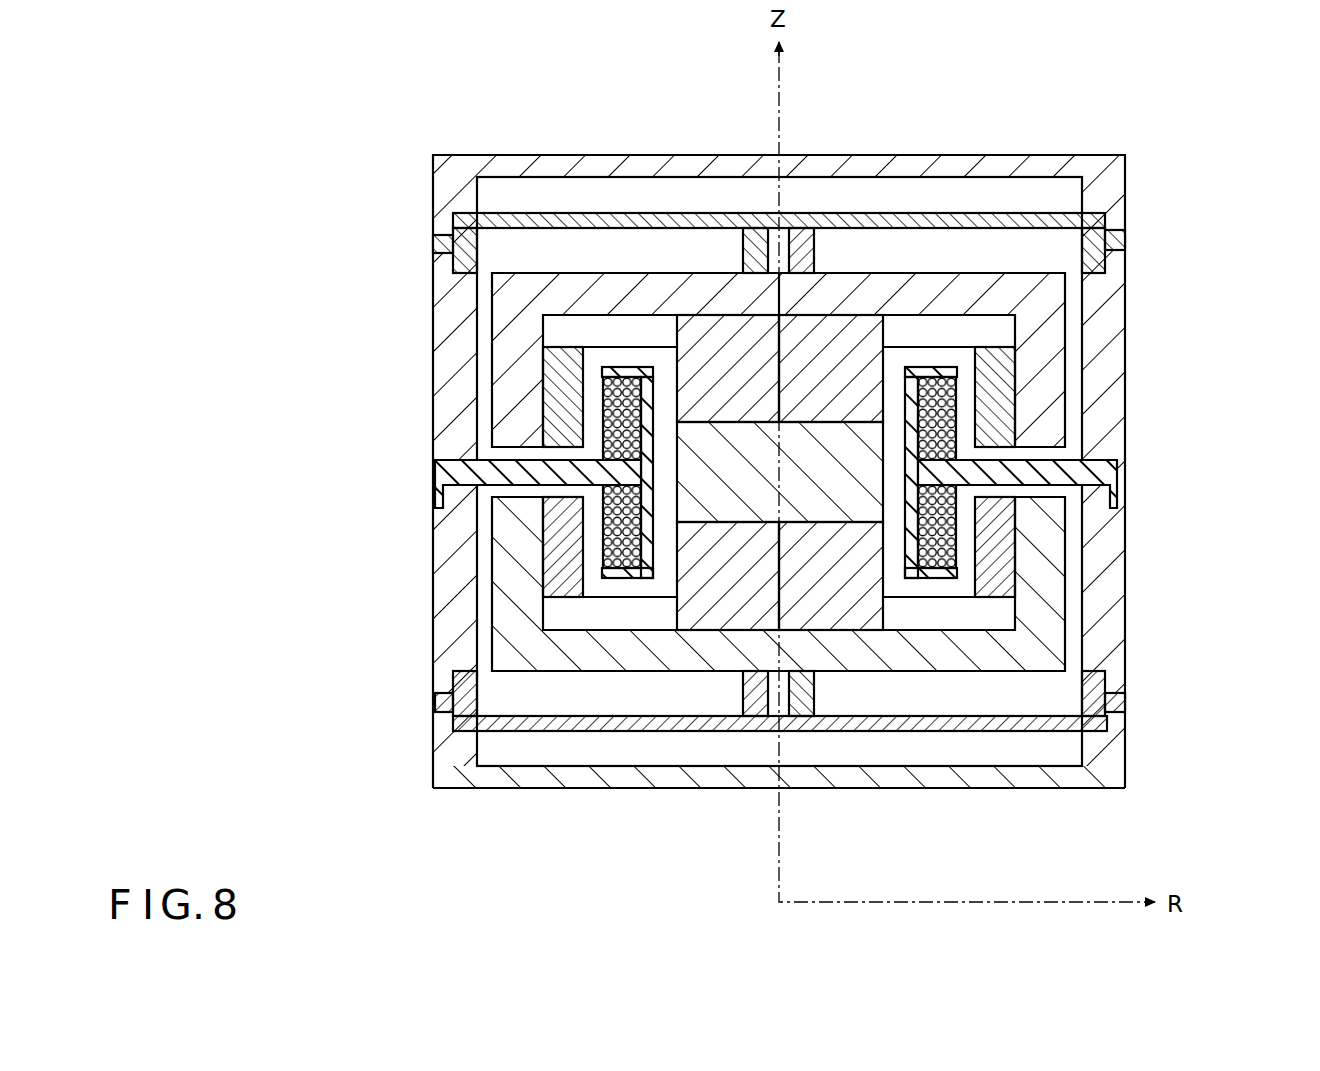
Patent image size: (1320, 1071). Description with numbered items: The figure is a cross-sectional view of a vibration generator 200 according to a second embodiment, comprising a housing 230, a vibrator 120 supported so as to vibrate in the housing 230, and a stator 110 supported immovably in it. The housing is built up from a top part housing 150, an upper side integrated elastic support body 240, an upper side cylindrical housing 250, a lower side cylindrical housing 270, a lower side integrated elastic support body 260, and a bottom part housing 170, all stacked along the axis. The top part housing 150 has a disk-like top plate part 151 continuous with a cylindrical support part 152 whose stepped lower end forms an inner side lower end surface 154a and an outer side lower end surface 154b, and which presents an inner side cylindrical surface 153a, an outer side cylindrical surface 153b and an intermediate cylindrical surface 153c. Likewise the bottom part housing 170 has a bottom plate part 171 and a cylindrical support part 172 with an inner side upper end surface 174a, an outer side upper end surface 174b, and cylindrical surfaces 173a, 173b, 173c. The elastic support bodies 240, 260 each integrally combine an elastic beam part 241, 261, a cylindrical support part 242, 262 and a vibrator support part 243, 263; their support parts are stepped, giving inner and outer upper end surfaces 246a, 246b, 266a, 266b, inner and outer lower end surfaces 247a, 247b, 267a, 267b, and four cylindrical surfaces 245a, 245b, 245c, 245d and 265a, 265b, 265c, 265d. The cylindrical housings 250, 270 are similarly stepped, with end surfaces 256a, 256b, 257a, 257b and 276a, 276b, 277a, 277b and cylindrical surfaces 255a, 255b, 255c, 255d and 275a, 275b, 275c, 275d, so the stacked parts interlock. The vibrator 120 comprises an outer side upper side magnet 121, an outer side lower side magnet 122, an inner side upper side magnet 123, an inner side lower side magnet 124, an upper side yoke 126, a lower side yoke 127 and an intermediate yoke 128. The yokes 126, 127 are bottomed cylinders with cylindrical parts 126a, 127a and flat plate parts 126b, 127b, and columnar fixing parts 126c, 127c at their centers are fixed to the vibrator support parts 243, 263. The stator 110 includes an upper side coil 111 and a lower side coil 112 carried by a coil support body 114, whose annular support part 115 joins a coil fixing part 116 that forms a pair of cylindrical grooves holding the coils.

The stator 110 is at (952, 350).
The upper side coil 111 is at (622, 340).
The lower side coil 112 is at (548, 700).
The coil support body 114 is at (1047, 449).
The support part 115 is at (575, 410).
The coil fixing part 116 is at (608, 590).
The vibrator 120 is at (940, 262).
The outer side upper side magnet 121 is at (560, 415).
The outer side lower side magnet 122 is at (1060, 580).
The inner side upper side magnet 123 is at (690, 330).
The inner side lower side magnet 124 is at (860, 600).
The upper side yoke 126 is at (910, 266).
The cylindrical part 126a is at (655, 290).
The flat plate part 126b is at (510, 350).
The fixing part 126c is at (748, 212).
The lower side yoke 127 is at (650, 680).
The cylindrical part 127a is at (1105, 605).
The flat plate part 127b is at (945, 655).
The fixing part 127c is at (790, 735).
The intermediate yoke 128 is at (880, 580).
The top part housing 150 is at (845, 152).
The top plate part 151 is at (800, 190).
The cylindrical support part 152 is at (450, 188).
The inner side cylindrical surface 153a is at (486, 205).
The outer side cylindrical surface 153b is at (440, 183).
The intermediate cylindrical surface 153c is at (468, 225).
The inner side lower end surface 154a is at (1095, 212).
The outer side lower end surface 154b is at (1110, 240).
The bottom part housing 170 is at (710, 793).
The bottom plate part 171 is at (765, 775).
The cylindrical support part 172 is at (1125, 760).
The inner side cylindrical surface 173a is at (1095, 770).
The outer side cylindrical surface 173b is at (1125, 772).
The intermediate cylindrical surface 173c is at (1118, 735).
The inner side upper end surface 174a is at (465, 770).
The outer side upper end surface 174b is at (460, 715).
The vibration generator 200 is at (405, 108).
The housing 230 is at (1130, 158).
The upper side integrated elastic support body 240 is at (877, 205).
The elastic beam part 241 is at (560, 213).
The cylindrical support part 242 is at (1110, 224).
The vibrator support part 243 is at (752, 252).
The inner side cylindrical surface 245a is at (492, 235).
The outer side cylindrical surface 245b is at (455, 243).
The upper side intermediate cylindrical surface 245c is at (455, 232).
The lower side intermediate cylindrical surface 245d is at (455, 265).
The inner side upper end surface 246a is at (1118, 218).
The outer side upper end surface 246b is at (1120, 235).
The inner side lower end surface 247a is at (1100, 290).
The outer side lower end surface 247b is at (1115, 268).
The upper side cylindrical housing 250 is at (460, 383).
The inner side cylindrical surface 255a is at (500, 330).
The outer side cylindrical surface 255b is at (480, 440).
The upper side intermediate cylindrical surface 255c is at (465, 285).
The lower side intermediate cylindrical surface 255d is at (455, 465).
The inner side upper end surface 256a is at (1105, 272).
The outer side upper end surface 256b is at (1112, 258).
The inner side lower end surface 257a is at (1115, 465).
The outer side lower end surface 257b is at (1115, 505).
The lower side integrated elastic support body 260 is at (680, 740).
The elastic beam part 261 is at (985, 760).
The cylindrical support part 262 is at (462, 742).
The vibrator support part 263 is at (800, 690).
The inner side cylindrical surface 265a is at (1080, 700).
The outer side cylindrical surface 265b is at (1112, 700).
The upper side intermediate cylindrical surface 265c is at (1110, 690).
The lower side intermediate cylindrical surface 265d is at (1112, 716).
The inner side upper end surface 266a is at (455, 650).
The outer side upper end surface 266b is at (455, 688).
The inner side lower end surface 267a is at (440, 760).
The outer side lower end surface 267b is at (450, 735).
The lower side cylindrical housing 270 is at (1050, 600).
The inner side cylindrical surface 275a is at (560, 565).
The outer side cylindrical surface 275b is at (470, 530).
The upper side intermediate cylindrical surface 275c is at (460, 498).
The lower side intermediate cylindrical surface 275d is at (1110, 662).
The inner side upper end surface 276a is at (1115, 485).
The outer side upper end surface 276b is at (1118, 495).
The inner side lower end surface 277a is at (465, 672).
The outer side lower end surface 277b is at (455, 702).